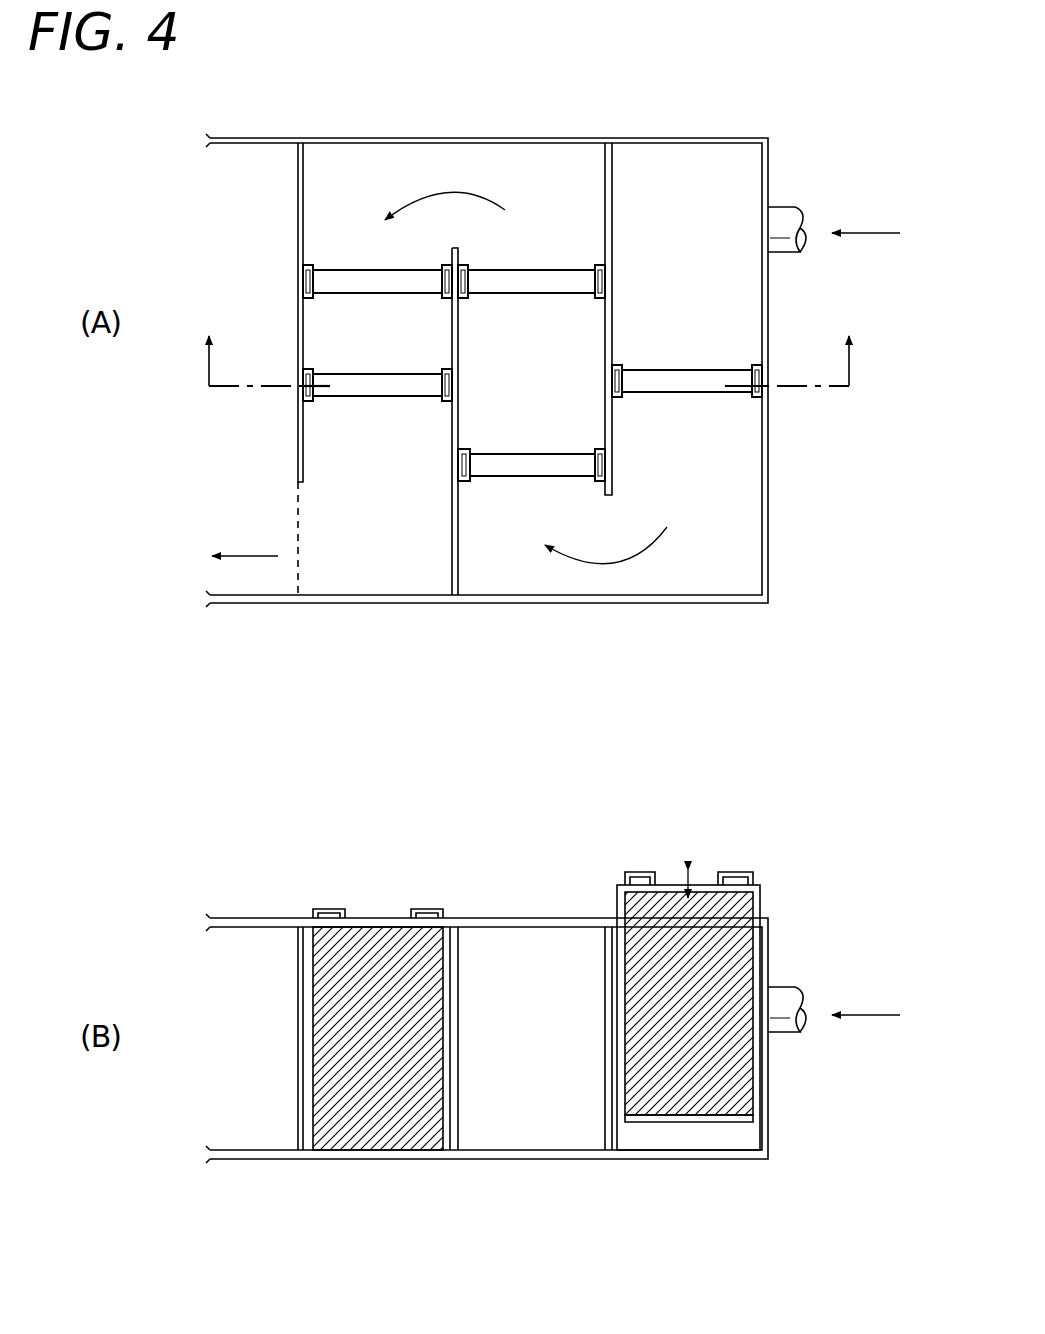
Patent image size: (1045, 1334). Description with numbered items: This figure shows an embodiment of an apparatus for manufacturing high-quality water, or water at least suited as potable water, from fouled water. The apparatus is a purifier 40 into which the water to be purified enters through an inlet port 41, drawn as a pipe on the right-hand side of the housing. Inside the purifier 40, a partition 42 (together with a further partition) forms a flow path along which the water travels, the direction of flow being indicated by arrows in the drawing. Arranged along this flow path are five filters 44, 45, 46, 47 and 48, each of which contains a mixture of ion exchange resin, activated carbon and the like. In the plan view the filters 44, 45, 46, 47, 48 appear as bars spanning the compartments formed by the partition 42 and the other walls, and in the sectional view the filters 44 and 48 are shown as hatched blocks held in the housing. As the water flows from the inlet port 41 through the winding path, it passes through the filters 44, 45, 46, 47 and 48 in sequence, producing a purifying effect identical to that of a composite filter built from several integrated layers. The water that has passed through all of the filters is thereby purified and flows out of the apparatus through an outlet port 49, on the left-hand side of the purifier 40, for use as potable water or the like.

The purifier 40 is at (655, 112).
The inlet port 41 is at (790, 215).
The partition 42 is at (612, 222).
The filter 44 is at (695, 378).
The filter 45 is at (545, 452).
The filter 46 is at (518, 288).
The filter 47 is at (343, 268).
The filter 48 is at (370, 386).
The outlet port 49 is at (298, 565).